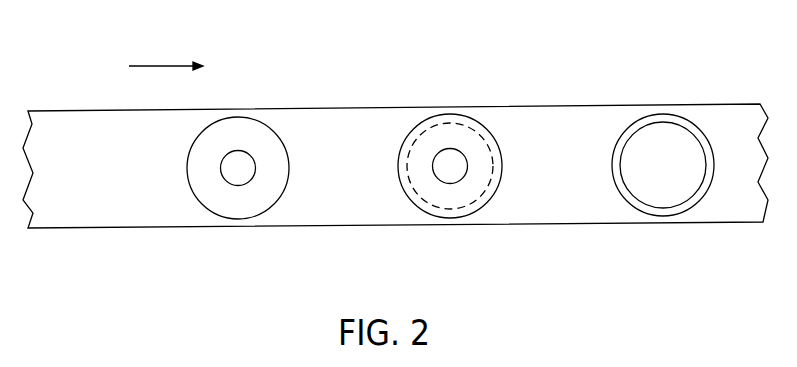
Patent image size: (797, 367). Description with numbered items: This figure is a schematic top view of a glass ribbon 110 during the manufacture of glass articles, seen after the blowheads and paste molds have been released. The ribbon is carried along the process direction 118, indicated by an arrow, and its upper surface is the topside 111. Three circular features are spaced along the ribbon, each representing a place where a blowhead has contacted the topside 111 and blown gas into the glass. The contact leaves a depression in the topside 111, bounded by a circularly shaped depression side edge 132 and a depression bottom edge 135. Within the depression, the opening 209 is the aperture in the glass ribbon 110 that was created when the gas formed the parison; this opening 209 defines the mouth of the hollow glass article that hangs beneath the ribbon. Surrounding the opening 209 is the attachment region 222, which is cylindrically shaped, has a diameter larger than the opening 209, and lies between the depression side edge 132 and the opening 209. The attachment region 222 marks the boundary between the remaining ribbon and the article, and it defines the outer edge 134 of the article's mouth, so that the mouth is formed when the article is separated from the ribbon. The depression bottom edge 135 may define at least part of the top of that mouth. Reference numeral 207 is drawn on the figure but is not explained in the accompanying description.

The glass ribbon 110 is at (130, 228).
The topside of the glass ribbon 111 is at (72, 182).
The process direction 118 is at (167, 66).
The depression side edge 132 is at (193, 192).
The outer edge of the mouth 134 is at (432, 123).
The depression bottom edge 135 is at (263, 145).
The inner opening top 207 is at (237, 152).
The opening 209 is at (238, 175).
The attachment region 222 is at (493, 162).